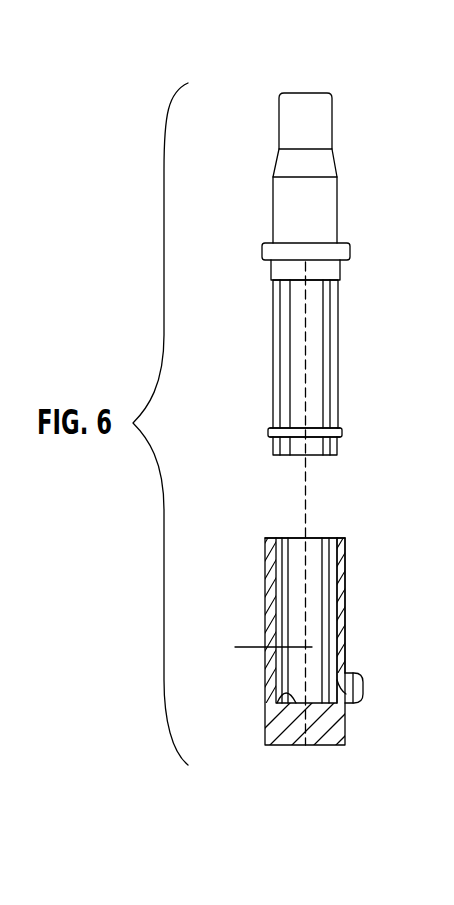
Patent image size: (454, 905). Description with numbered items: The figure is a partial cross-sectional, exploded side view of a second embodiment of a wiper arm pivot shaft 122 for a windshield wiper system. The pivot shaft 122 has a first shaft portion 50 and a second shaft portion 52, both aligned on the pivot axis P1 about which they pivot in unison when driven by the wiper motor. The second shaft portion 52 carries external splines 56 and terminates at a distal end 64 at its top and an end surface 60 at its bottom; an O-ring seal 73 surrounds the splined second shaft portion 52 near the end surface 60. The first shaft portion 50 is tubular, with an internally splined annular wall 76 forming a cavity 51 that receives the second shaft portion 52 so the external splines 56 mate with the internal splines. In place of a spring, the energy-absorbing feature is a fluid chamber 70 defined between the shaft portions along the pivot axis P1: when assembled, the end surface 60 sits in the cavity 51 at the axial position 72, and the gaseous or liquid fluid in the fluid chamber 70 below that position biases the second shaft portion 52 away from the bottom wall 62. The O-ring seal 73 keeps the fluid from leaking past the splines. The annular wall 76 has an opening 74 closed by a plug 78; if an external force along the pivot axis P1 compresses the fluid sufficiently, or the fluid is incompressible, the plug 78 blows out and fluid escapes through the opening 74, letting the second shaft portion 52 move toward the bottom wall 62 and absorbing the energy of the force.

The pivot shaft 122 is at (292, 282).
The distal end 64 is at (317, 93).
The second shaft portion 52 is at (275, 302).
The external splines 56 is at (283, 357).
The O-ring seal 73 is at (341, 433).
The end surface 60 is at (293, 458).
The pivot axis P1 is at (305, 488).
The cavity 51 is at (310, 540).
The first shaft portion 50 is at (310, 630).
The annular wall 76 is at (341, 568).
The fluid chamber 70 is at (313, 618).
The axial position 72 is at (260, 650).
The bottom wall 62 is at (277, 694).
The plug 78 is at (352, 672).
The opening 74 is at (362, 698).